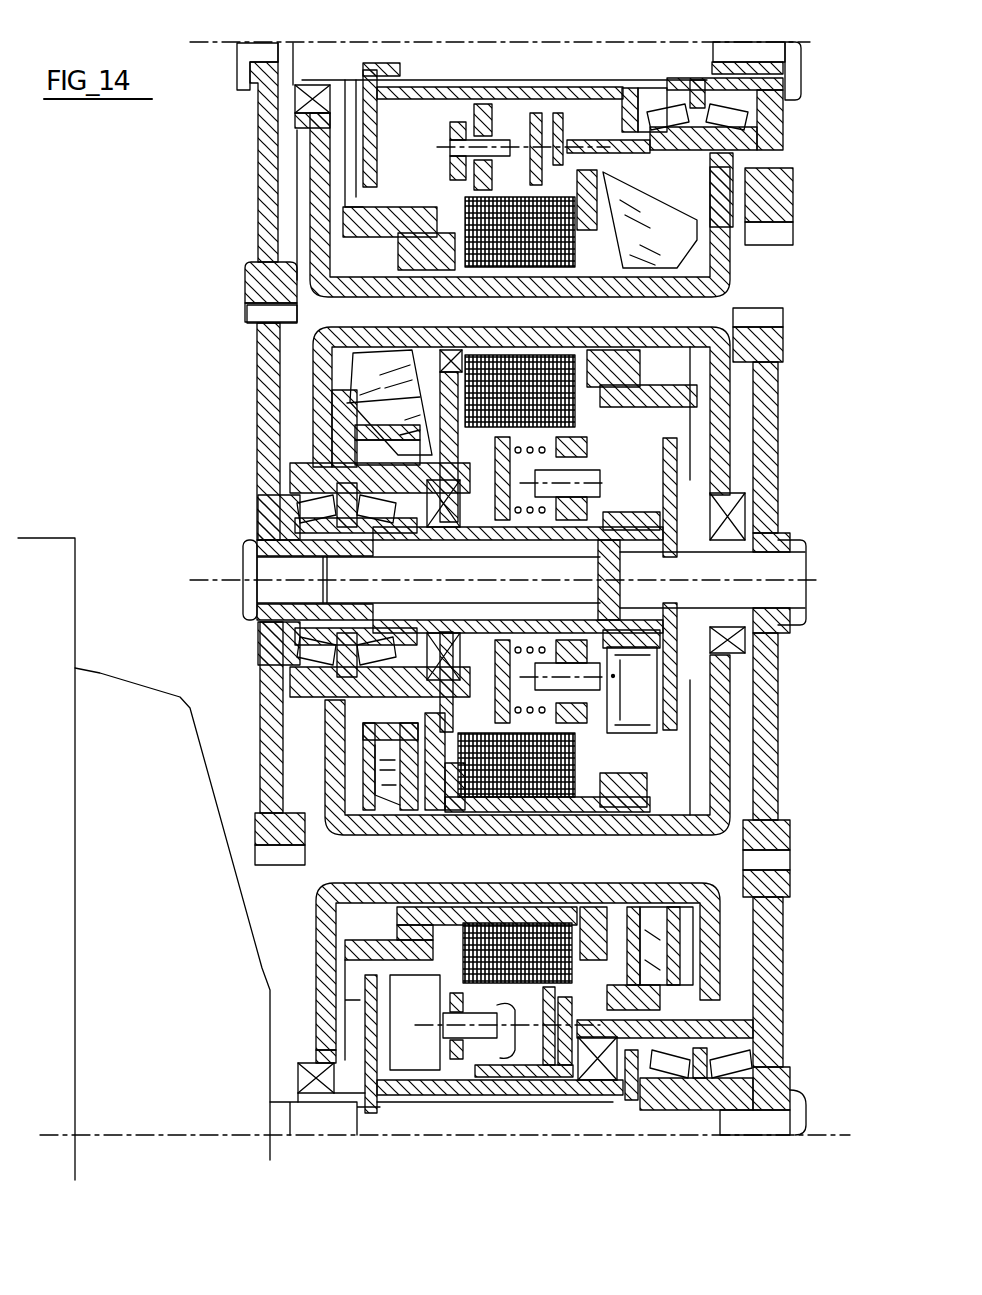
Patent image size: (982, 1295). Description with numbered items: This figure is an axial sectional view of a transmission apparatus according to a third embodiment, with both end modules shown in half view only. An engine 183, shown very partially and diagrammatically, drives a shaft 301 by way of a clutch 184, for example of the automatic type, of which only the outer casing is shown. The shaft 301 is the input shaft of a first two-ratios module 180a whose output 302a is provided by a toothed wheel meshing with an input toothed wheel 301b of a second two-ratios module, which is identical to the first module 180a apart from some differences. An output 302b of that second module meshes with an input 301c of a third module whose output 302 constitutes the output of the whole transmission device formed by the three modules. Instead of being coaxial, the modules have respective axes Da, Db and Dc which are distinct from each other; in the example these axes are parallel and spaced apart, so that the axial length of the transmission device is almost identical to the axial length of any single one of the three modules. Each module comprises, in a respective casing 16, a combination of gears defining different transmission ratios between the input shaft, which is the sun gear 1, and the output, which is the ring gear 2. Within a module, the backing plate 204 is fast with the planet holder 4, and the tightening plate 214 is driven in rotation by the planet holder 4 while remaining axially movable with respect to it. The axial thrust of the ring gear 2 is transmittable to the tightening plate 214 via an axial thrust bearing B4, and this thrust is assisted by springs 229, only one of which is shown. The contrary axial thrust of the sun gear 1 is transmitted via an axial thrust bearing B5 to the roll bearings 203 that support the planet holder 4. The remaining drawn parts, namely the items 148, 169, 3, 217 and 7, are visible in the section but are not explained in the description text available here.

The axis of third module Dc is at (528, 42).
The axis of second module Db is at (212, 578).
The axis of first module Da is at (517, 1138).
The engine 183 is at (80, 548).
The clutch 184 is at (133, 668).
The shaft 301 is at (320, 1123).
The input of third module 301c is at (258, 178).
The output of second module 302b is at (262, 420).
The output of third module 302 is at (772, 192).
The axial thrust bearing B4 is at (455, 354).
The casing 16 is at (528, 832).
The friction disc pack 148 is at (472, 349).
The backing plate 204 is at (585, 372).
The centrifugal weight 169 is at (395, 372).
The tightening plate 214 is at (430, 398).
The roll bearings 203 is at (284, 492).
The springs 229 is at (533, 507).
The planet holder 4 is at (567, 515).
The sun gear 1 is at (637, 520).
The axial thrust bearing B5 is at (650, 522).
The shaft 3 is at (632, 690).
The clutch housing 217 is at (535, 767).
The input toothed wheel of second module 301b is at (770, 710).
The output of first module 302a is at (772, 962).
The first two-ratios module 180a is at (309, 962).
The ring gear 2 is at (393, 950).
The piston 7 is at (400, 1000).